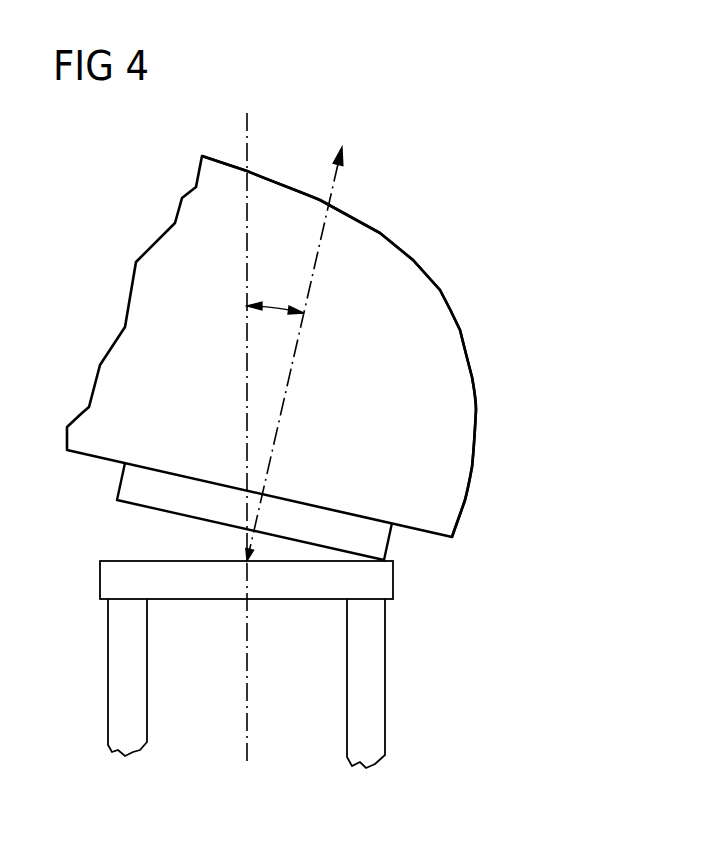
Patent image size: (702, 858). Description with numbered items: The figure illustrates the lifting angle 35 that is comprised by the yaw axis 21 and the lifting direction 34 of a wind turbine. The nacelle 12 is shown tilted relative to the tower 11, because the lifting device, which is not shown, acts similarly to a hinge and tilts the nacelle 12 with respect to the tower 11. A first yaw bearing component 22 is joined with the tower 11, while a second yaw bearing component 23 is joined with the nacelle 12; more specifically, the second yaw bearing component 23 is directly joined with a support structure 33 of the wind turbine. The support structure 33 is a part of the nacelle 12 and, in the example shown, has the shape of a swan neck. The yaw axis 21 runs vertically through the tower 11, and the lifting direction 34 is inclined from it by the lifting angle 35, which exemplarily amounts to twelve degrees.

The tower 11 is at (133, 686).
The nacelle 12 is at (460, 463).
The yaw axis 21 is at (247, 130).
The first yaw bearing component 22 is at (199, 587).
The second yaw bearing component 23 is at (127, 485).
The support structure 33 is at (339, 346).
The lifting direction 34 is at (336, 190).
The lifting angle 35 is at (279, 302).